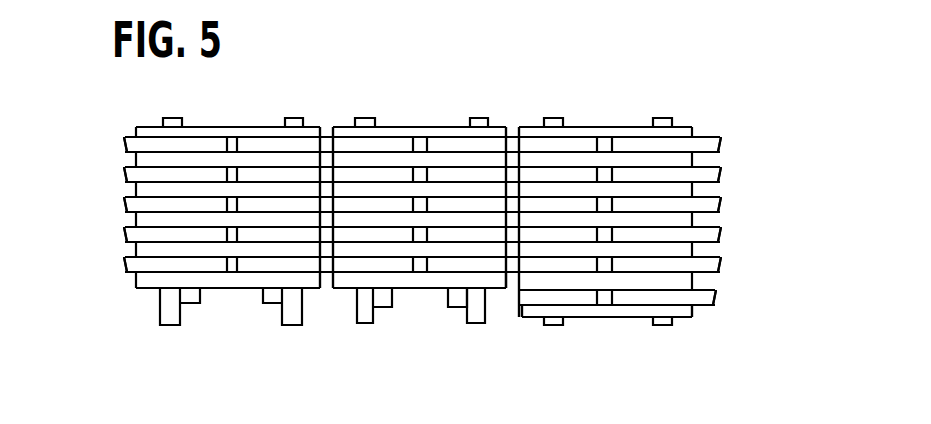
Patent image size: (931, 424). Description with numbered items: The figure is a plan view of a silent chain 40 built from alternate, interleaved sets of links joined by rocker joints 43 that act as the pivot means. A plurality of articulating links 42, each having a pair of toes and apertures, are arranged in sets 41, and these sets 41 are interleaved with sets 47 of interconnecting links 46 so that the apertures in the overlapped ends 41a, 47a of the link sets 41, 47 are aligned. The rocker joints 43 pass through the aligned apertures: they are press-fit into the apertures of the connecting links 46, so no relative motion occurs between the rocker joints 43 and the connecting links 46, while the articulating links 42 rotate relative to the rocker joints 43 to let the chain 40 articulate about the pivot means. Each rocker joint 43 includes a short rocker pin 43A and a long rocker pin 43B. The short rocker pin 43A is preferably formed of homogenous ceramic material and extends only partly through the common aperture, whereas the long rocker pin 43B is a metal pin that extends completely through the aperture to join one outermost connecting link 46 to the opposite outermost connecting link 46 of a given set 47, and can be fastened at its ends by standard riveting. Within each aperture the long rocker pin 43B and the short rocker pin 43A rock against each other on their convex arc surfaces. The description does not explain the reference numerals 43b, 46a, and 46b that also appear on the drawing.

The silent chain 40 is at (415, 86).
The set of articulating links 41 is at (512, 301).
The overlapped end of link set 41 41a is at (706, 307).
The articulating link 42 is at (132, 249).
The rocker joint 43 is at (193, 317).
The short rocker pin 43A is at (457, 307).
The long rocker pin 43B is at (477, 322).
The upper projections 43b is at (478, 117).
The interconnecting link 46 is at (266, 132).
The upper spacer plate 46a is at (450, 129).
The lower spacer plate 46b is at (420, 284).
The set of interconnecting links 47 is at (349, 125).
The overlapped end of link set 47 47a is at (683, 318).